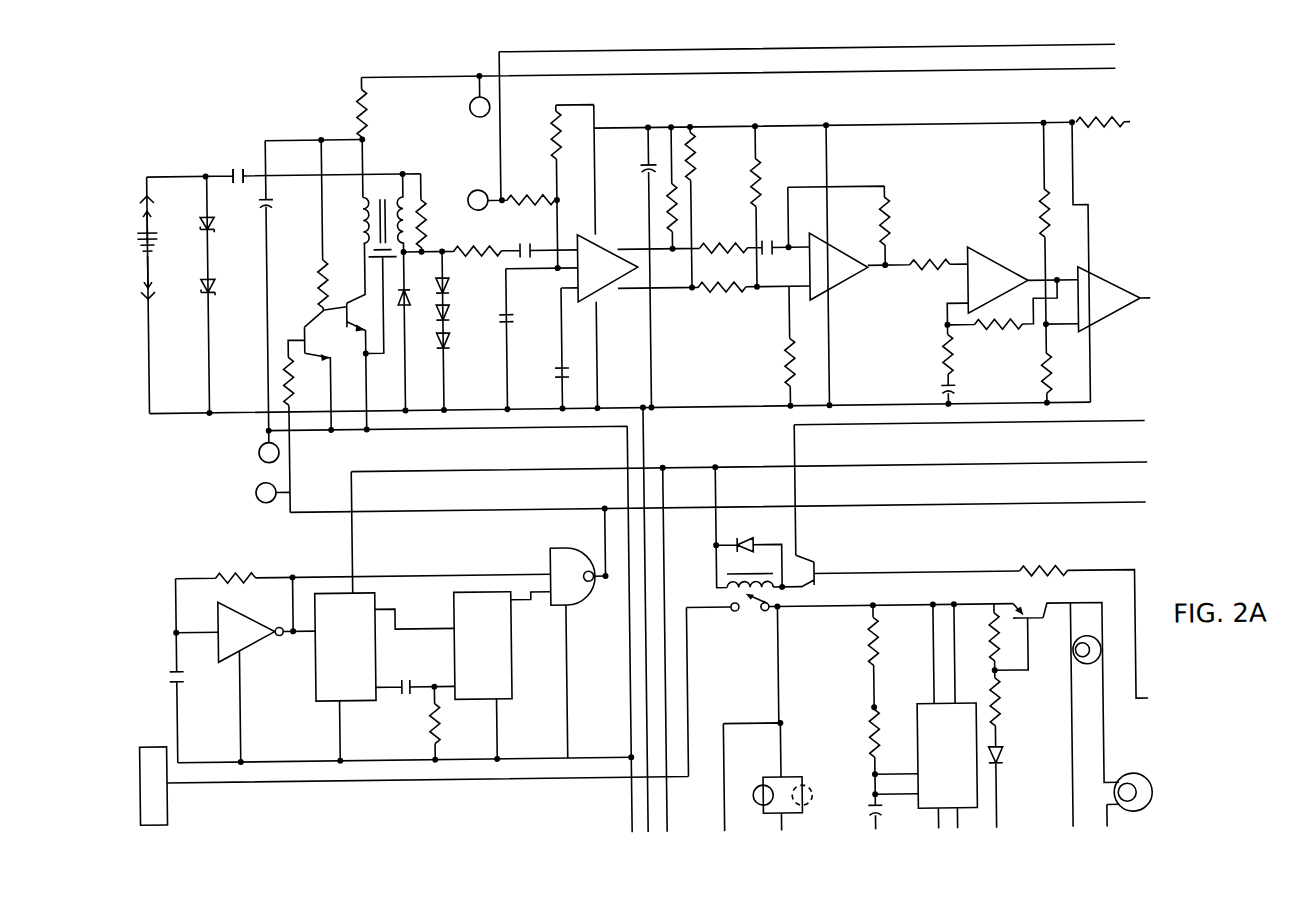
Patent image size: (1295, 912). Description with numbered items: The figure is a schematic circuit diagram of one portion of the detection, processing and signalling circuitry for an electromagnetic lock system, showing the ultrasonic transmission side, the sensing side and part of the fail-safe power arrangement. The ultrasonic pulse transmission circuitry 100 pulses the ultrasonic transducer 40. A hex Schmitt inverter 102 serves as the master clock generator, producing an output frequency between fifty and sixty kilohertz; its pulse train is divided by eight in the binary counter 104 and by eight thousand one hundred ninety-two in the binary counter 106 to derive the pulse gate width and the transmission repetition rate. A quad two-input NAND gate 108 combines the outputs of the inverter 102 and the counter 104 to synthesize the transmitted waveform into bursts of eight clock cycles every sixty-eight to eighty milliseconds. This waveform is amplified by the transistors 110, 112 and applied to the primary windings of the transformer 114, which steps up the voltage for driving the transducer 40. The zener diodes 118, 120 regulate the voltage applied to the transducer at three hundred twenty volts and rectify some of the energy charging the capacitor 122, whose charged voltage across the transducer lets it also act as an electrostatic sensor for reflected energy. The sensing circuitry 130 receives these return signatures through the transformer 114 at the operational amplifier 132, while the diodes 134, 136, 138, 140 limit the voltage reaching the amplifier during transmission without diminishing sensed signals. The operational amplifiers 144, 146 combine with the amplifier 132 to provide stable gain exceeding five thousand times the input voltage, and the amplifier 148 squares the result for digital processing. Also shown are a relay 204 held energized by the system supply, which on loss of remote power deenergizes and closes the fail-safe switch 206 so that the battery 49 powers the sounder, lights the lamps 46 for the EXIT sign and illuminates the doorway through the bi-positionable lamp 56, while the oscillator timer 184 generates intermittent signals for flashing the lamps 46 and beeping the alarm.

The ultrasonic transducer 40 is at (142, 252).
The capacitor 122 is at (232, 163).
The zener diode 118 is at (210, 233).
The zener diode 120 is at (211, 297).
The transformer 114 is at (381, 187).
The transistor 110 is at (309, 316).
The transistor 112 is at (351, 294).
The diode 134 is at (402, 351).
The diode 136 is at (452, 282).
The diode 138 is at (452, 310).
The diode 140 is at (452, 338).
The sensing circuitry 130 is at (855, 116).
The operational amplifier 132 is at (602, 285).
The operational amplifier 144 is at (854, 300).
The operational amplifier 146 is at (1002, 255).
The amplifier 148 is at (1119, 319).
The ultrasonic pulse transmission circuitry 100 is at (277, 554).
The hex Schmitt inverter 102 is at (250, 641).
The binary counter 104 is at (311, 678).
The binary counter 106 is at (462, 646).
The quad 2-input NAND gate 108 is at (548, 553).
The battery 49 is at (170, 795).
The relay 204 is at (756, 579).
The fail-safe switch 206 is at (751, 616).
The bi-positionable lamp 56 is at (766, 791).
The oscillator timer 184 is at (921, 721).
The lamps 46 is at (1072, 655).